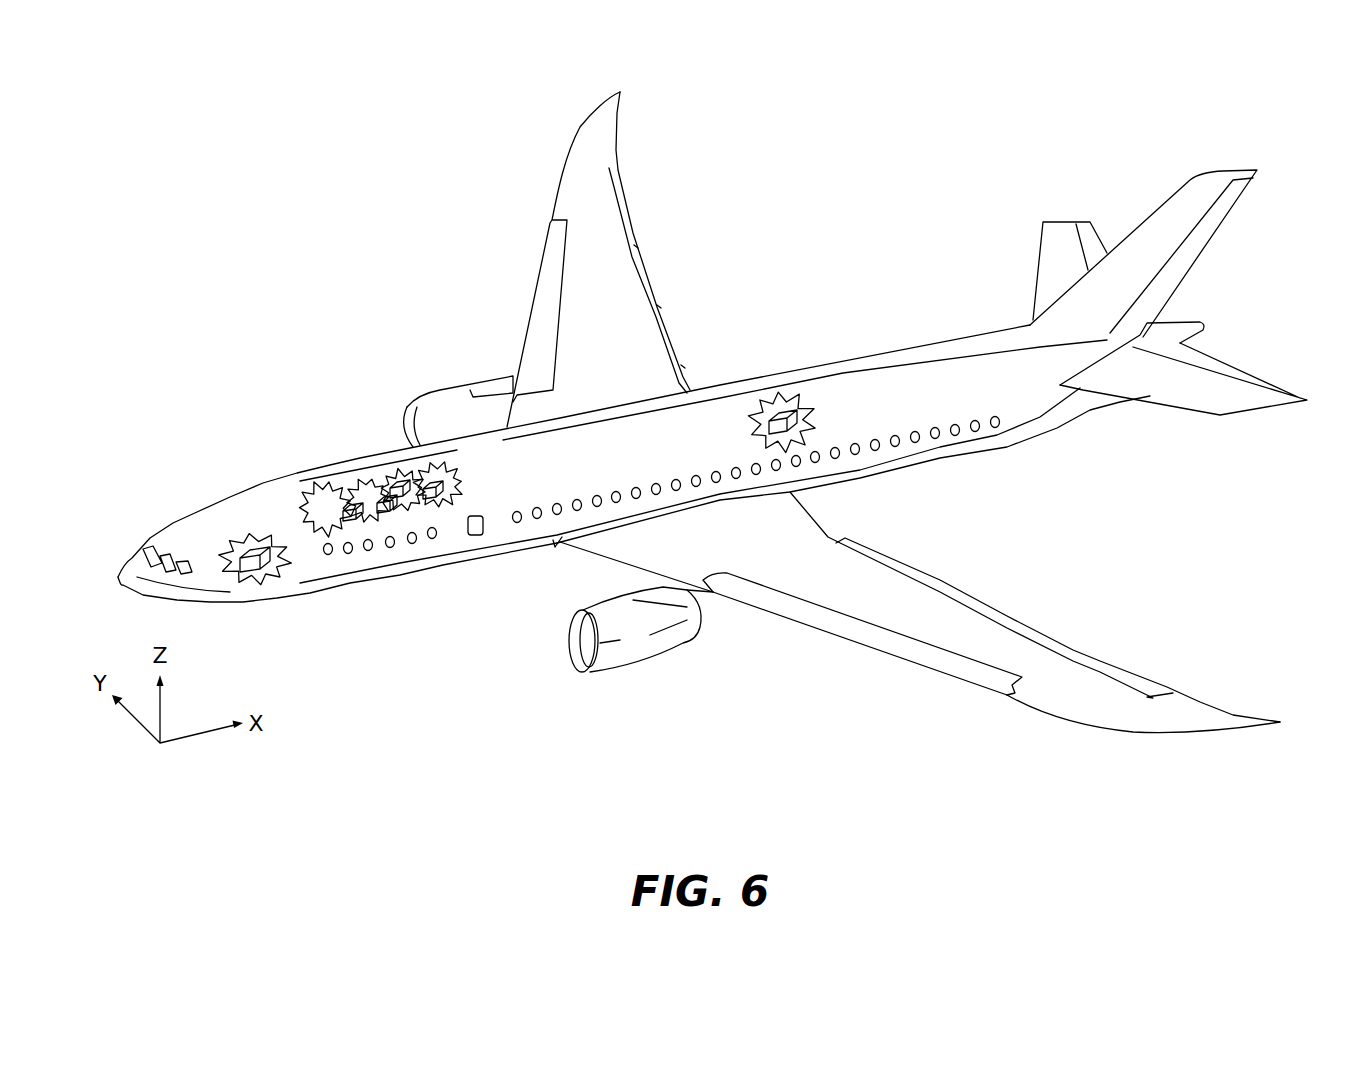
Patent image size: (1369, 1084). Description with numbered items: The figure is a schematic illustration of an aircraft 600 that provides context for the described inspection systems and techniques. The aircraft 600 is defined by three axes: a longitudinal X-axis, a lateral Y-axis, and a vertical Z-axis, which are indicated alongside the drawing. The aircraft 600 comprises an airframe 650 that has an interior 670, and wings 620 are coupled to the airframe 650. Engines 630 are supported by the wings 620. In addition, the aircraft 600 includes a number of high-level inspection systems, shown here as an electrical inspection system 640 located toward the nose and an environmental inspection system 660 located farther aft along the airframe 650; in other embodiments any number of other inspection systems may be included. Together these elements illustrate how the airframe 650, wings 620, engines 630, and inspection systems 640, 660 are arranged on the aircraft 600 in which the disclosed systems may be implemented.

The aircraft 600 is at (400, 271).
The wings 620 is at (623, 285).
The engines 630 is at (442, 384).
The electrical inspection system 640 is at (253, 537).
The airframe 650 is at (368, 504).
The environmental inspection system 660 is at (780, 390).
The interior 670 is at (353, 517).